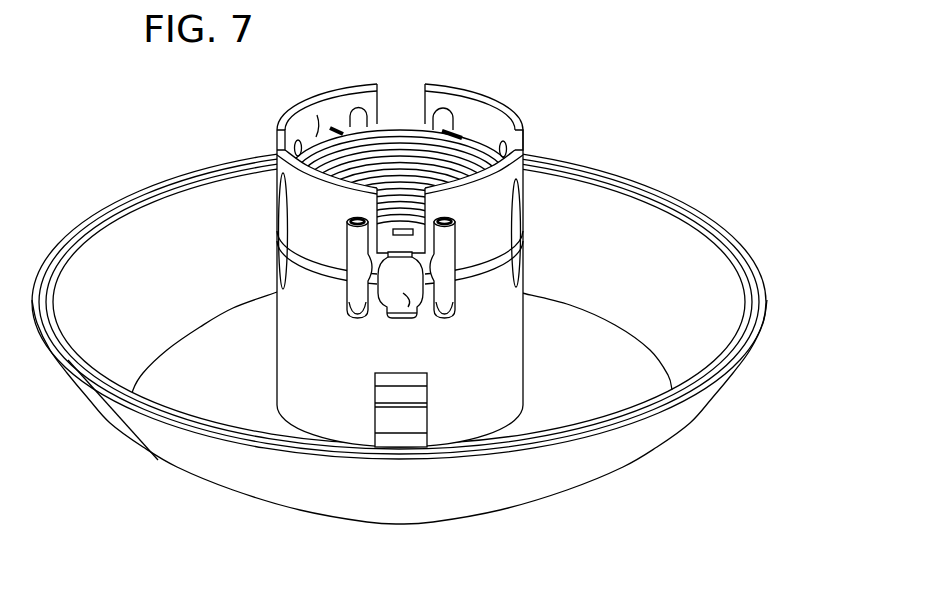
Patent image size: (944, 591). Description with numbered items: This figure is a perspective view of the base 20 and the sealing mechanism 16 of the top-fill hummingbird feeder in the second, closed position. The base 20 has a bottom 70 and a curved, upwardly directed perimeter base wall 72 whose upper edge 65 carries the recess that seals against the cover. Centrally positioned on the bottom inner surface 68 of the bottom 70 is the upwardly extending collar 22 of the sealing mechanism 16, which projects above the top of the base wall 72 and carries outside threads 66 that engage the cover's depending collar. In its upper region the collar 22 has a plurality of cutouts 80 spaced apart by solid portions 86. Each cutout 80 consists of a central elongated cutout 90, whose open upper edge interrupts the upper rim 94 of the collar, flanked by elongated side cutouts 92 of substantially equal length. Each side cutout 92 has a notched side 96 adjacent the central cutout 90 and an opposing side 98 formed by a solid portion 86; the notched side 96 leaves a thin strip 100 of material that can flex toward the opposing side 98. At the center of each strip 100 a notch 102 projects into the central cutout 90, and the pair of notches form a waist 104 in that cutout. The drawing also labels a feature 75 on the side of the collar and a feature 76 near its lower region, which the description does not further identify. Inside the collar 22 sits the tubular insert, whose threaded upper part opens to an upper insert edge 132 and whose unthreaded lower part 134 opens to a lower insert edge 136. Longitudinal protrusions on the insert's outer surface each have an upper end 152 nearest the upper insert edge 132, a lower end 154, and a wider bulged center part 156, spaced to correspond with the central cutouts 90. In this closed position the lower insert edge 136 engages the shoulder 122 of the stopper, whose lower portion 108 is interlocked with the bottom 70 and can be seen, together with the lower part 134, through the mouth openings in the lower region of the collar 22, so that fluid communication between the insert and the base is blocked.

The sealing mechanism 16 is at (177, 337).
The base 20 is at (140, 394).
The upwardly extending collar 22 is at (348, 365).
The upper edge of the base wall 65 is at (50, 267).
The outside threads 66 is at (285, 243).
The bottom inner surface 68 is at (577, 396).
The bottom 70 is at (629, 353).
The perimeter base wall 72 is at (682, 230).
The side slot 75 is at (277, 173).
The housing bottom 76 is at (500, 413).
The cutouts 80 is at (472, 207).
The solid portions 86 is at (320, 100).
The central elongated cutout 90 is at (398, 103).
The elongated side cutout 92 is at (350, 290).
The upper rim 94 is at (477, 90).
The notched side 96 is at (357, 312).
The opposing side 98 is at (347, 233).
The strip 100 is at (345, 260).
The notch 102 is at (398, 262).
The waist 104 is at (403, 268).
The lower portion of the stopper 108 is at (423, 537).
The shoulder 122 is at (400, 65).
The upper insert edge 132 is at (316, 137).
The unthreaded lower part 134 is at (383, 392).
The lower insert edge 136 is at (383, 405).
The upper end 152 is at (480, 283).
The lower end 154 is at (394, 320).
The bulged center part 156 is at (405, 295).